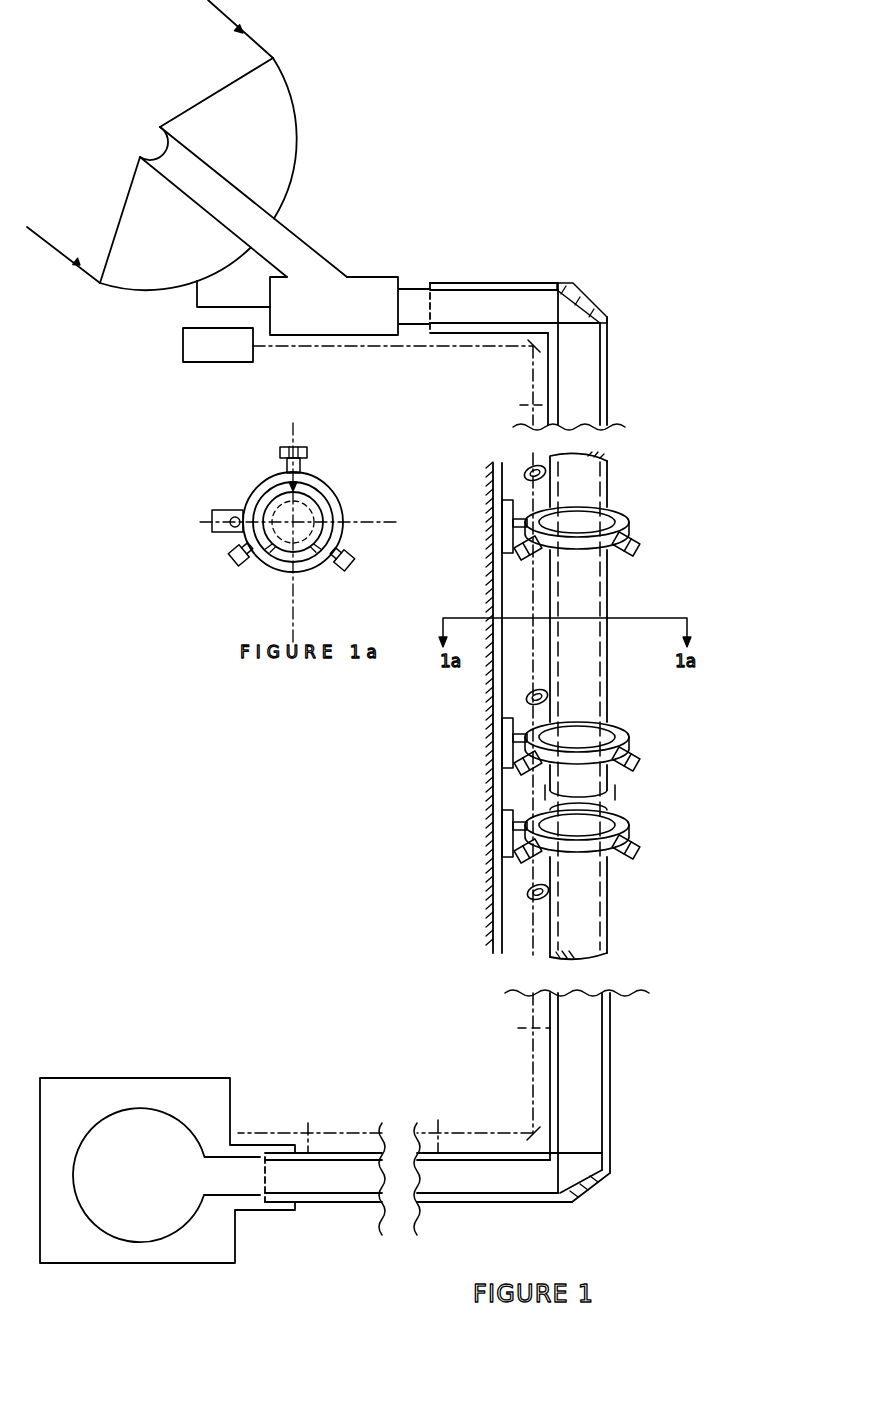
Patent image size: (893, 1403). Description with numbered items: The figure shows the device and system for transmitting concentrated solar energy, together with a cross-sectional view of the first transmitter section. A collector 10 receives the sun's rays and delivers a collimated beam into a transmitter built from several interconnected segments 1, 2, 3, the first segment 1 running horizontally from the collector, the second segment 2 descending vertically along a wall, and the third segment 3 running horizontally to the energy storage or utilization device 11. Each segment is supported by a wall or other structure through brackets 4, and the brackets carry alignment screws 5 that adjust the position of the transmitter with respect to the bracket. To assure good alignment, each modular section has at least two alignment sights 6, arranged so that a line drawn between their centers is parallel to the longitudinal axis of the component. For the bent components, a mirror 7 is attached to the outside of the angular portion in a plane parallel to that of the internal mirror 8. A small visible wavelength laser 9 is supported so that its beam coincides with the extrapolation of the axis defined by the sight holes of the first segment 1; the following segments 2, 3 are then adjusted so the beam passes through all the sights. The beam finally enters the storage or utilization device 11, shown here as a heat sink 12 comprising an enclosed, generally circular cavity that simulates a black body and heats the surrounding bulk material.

In FIG. 1, the first segment 1 is at (498, 283).
In FIG. 1A, the first segment 1 is at (313, 502).
In FIG. 1, the second segment 2 is at (607, 912).
In FIG. 1, the third segment 3 is at (478, 1203).
In FIG. 1, the brackets 4 is at (505, 545).
In FIG. 1, the alignment screws 5 is at (642, 542).
In FIG. 1A, the alignment screws 5 is at (355, 552).
In FIG. 1, the alignment sights 6 is at (452, 347).
In FIG. 1, the mirror 7 is at (548, 333).
In FIG. 1, the internal mirror 8 is at (610, 1173).
In FIG. 1, the laser 9 is at (213, 353).
In FIG. 1, the collector 10 is at (287, 117).
In FIG. 1, the energy storage or utilization device 11 is at (72, 1087).
In FIG. 1, the heat sink 12 is at (144, 1213).